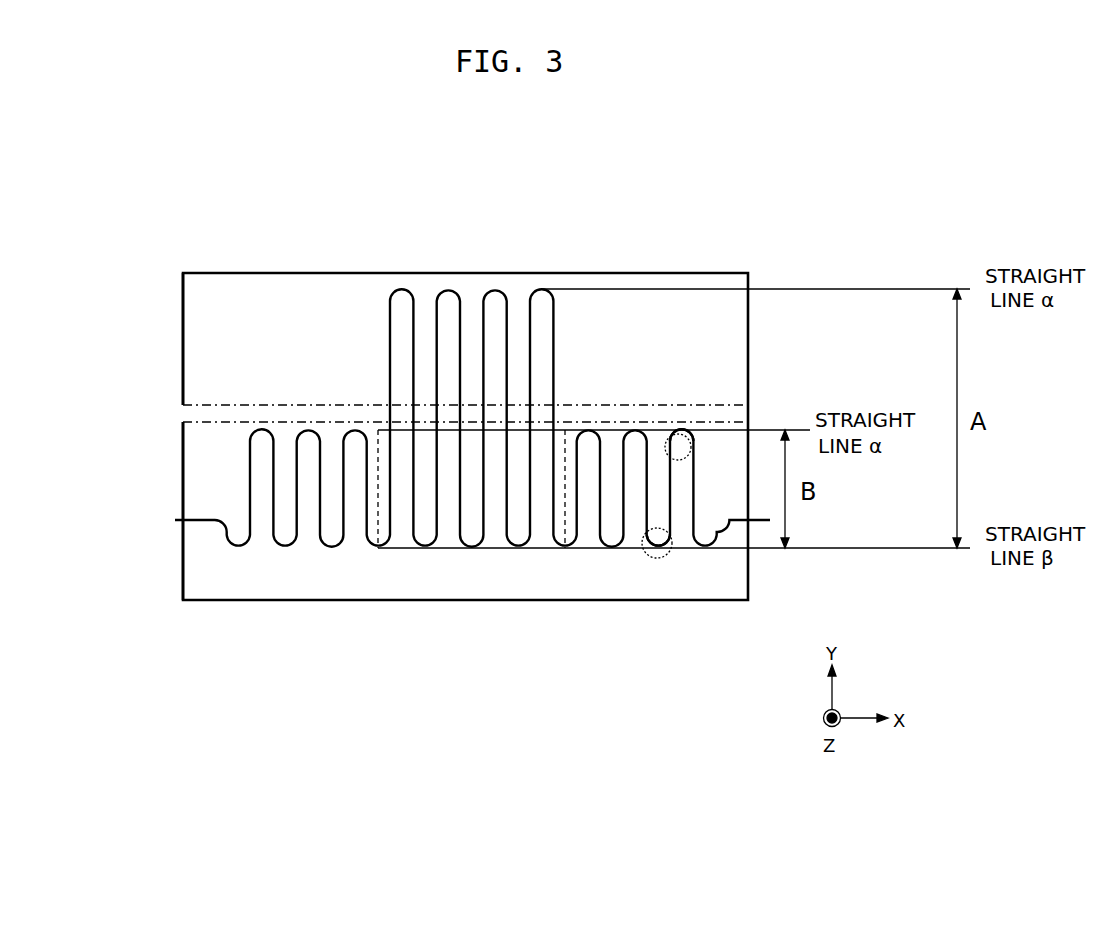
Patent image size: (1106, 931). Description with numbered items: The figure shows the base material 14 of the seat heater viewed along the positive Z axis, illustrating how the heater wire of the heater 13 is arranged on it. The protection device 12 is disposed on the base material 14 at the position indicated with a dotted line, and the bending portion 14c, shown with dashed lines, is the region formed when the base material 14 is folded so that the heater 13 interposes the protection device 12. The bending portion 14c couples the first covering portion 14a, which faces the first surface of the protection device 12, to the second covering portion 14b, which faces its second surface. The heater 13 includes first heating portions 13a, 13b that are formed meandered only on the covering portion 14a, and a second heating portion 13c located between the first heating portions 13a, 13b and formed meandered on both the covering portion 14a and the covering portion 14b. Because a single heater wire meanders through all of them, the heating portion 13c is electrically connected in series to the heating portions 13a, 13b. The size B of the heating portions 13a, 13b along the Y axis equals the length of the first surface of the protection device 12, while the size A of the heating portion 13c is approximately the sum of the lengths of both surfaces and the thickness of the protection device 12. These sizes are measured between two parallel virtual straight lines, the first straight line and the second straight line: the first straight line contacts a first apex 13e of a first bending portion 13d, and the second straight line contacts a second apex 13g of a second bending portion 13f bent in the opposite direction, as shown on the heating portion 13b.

The protection device 12 is at (472, 435).
The heater 13 is at (197, 521).
The first heating portion 13a is at (373, 262).
The first heating portion 13b is at (727, 262).
The second heating portion 13c is at (563, 262).
The first bending portion 13d is at (702, 440).
The first apex 13e is at (665, 458).
The second bending portion 13f is at (673, 553).
The second apex 13g is at (657, 550).
The base material 14 is at (214, 271).
The first covering portion 14a is at (195, 488).
The second covering portion 14b is at (205, 378).
The bending portion 14c is at (177, 398).